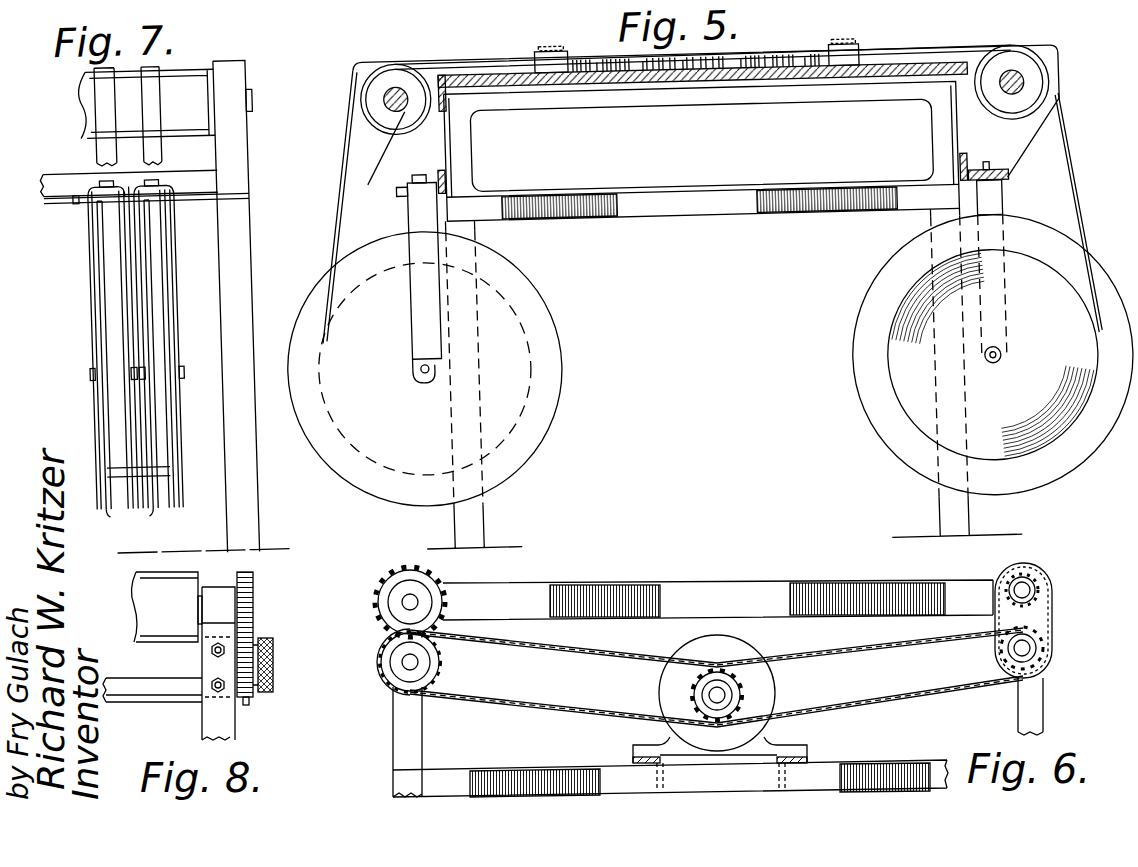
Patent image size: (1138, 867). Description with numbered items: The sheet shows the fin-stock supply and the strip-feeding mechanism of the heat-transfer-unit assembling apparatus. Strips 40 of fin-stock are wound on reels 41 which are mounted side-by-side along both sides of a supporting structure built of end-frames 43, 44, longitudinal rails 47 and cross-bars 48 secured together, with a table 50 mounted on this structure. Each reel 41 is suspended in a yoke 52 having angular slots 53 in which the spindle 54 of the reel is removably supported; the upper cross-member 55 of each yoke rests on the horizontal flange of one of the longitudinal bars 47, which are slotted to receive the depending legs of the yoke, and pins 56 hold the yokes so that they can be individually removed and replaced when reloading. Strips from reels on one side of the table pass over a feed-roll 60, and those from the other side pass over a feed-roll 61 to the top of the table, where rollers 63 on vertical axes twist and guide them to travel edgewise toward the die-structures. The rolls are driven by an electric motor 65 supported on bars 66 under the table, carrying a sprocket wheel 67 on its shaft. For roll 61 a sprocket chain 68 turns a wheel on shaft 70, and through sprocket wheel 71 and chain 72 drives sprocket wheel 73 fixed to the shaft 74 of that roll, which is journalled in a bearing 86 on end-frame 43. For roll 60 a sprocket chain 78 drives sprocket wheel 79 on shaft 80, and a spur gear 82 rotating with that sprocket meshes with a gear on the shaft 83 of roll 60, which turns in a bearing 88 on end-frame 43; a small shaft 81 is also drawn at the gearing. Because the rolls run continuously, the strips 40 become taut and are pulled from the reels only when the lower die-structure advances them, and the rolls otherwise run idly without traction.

In FIG. 5, the strips of fin-stock 40 is at (790, 57).
In FIG. 7, the strips of fin-stock 40 is at (166, 451).
In FIG. 5, the reels 41 is at (1092, 494).
In FIG. 7, the reels 41 is at (131, 515).
In FIG. 5, the end-frame 43 is at (478, 165).
In FIG. 7, the end-frame 43 is at (252, 280).
In FIG. 6, the end-frame 43 is at (393, 762).
In FIG. 8, the end-frame 44 is at (233, 732).
In FIG. 5, the longitudinal rails 47 is at (964, 173).
In FIG. 7, the longitudinal rails 47 is at (192, 202).
In FIG. 8, the longitudinal rails 47 is at (150, 688).
In FIG. 5, the cross-bars 48 is at (583, 215).
In FIG. 5, the table 50 is at (528, 82).
In FIG. 5, the yoke 52 is at (411, 303).
In FIG. 7, the yoke 52 is at (91, 312).
In FIG. 5, the angular slots 53 is at (440, 351).
In FIG. 5, the spindle 54 is at (432, 372).
In FIG. 7, the spindle 54 is at (182, 373).
In FIG. 5, the upper cross-member 55 is at (990, 176).
In FIG. 7, the upper cross-member 55 is at (163, 184).
In FIG. 7, the pins 56 is at (76, 202).
In FIG. 5, the feed-roll 60 is at (400, 57).
In FIG. 8, the feed-roll 60 is at (166, 607).
In FIG. 5, the feed-roll 61 is at (1020, 53).
In FIG. 7, the feed-roll 61 is at (215, 78).
In FIG. 5, the rollers 63 is at (541, 50).
In FIG. 6, the electric motor 65 is at (780, 743).
In FIG. 6, the bars 66 is at (632, 750).
In FIG. 6, the sprocket wheel 67 is at (700, 695).
In FIG. 6, the sprocket chain 68 is at (850, 660).
In FIG. 6, the shaft 70 is at (1040, 655).
In FIG. 6, the sprocket wheel 71 is at (1050, 640).
In FIG. 6, the chain 72 is at (1050, 612).
In FIG. 6, the sprocket wheel 73 is at (1052, 590).
In FIG. 5, the shaft 74 is at (1030, 90).
In FIG. 6, the shaft 74 is at (1035, 568).
In FIG. 8, the sprocket chain 78 is at (272, 655).
In FIG. 6, the sprocket chain 78 is at (558, 706).
In FIG. 8, the sprocket wheel 79 is at (273, 685).
In FIG. 6, the sprocket wheel 79 is at (442, 667).
In FIG. 6, the shaft 80 is at (408, 665).
In FIG. 8, the shaft 81 is at (248, 702).
In FIG. 8, the spur gear 82 is at (253, 610).
In FIG. 6, the spur gear 82 is at (420, 585).
In FIG. 5, the shaft 83 is at (403, 104).
In FIG. 6, the shaft 83 is at (420, 598).
In FIG. 5, the bearing 86 is at (1063, 110).
In FIG. 7, the bearing 86 is at (245, 90).
In FIG. 5, the bearing 88 is at (395, 160).